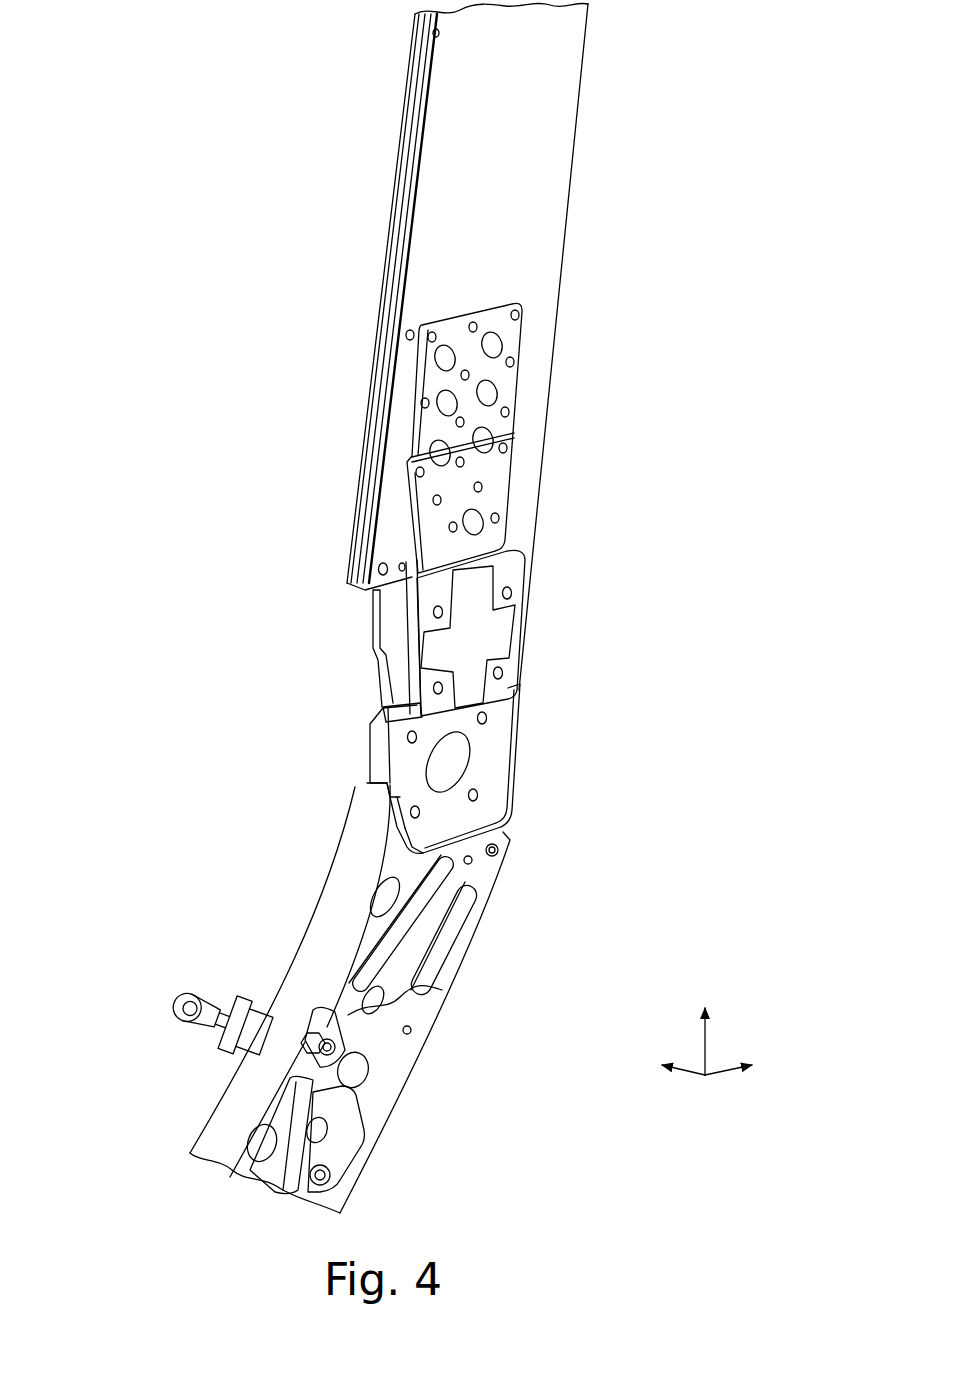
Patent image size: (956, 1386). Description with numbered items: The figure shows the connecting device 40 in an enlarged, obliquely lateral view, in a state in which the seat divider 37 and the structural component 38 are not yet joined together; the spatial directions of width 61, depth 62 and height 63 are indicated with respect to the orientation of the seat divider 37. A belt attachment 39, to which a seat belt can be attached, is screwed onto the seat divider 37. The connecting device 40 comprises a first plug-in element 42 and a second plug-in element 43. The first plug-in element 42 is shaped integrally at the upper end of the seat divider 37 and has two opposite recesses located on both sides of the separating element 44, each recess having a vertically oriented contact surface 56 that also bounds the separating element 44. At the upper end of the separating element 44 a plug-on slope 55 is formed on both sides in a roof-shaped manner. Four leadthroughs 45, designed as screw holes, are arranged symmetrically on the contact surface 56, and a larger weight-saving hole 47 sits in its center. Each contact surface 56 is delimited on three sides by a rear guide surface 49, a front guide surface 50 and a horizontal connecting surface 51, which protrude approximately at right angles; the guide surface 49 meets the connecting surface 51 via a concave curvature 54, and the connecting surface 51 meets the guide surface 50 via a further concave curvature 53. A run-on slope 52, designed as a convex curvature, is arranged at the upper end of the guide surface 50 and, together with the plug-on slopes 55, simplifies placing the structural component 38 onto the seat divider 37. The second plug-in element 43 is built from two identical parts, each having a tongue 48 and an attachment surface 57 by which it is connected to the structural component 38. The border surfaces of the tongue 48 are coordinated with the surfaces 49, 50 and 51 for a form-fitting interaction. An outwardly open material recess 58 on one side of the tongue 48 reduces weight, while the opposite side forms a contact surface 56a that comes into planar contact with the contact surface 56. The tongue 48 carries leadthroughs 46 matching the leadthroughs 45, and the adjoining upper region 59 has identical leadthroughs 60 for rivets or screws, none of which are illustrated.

The seat divider 37 is at (328, 937).
The structural component 38 is at (530, 195).
The belt attachment 39 is at (172, 985).
The connecting device 40 is at (177, 583).
The first plug-in element 42 is at (577, 802).
The second plug-in element 43 is at (563, 493).
The separating element 44 is at (377, 745).
The leadthroughs 45 is at (490, 712).
The leadthrough 46 is at (510, 590).
The hole 47 is at (455, 762).
The tongue 48 is at (545, 645).
The guide surface 49 is at (505, 785).
The guide surface 50 is at (393, 823).
The connecting surface 51 is at (500, 840).
The run-on slope 52 is at (355, 783).
The concave curvature 53 is at (413, 833).
The concave curvature 54 is at (483, 813).
The plug-on slope 55 is at (365, 703).
The contact surface 56 is at (348, 758).
The contact surface 56a is at (393, 618).
The attachment surface 57 is at (412, 398).
The material recess 58 is at (502, 635).
The upper region 59 is at (525, 425).
The leadthrough 60 is at (497, 332).
The width 61 is at (669, 1083).
The depth 62 is at (742, 1083).
The height 63 is at (705, 1025).